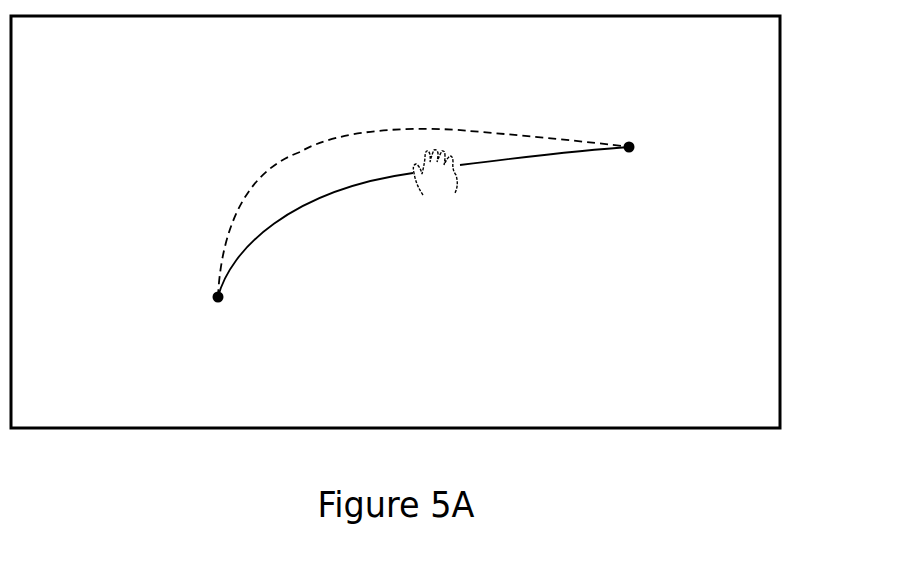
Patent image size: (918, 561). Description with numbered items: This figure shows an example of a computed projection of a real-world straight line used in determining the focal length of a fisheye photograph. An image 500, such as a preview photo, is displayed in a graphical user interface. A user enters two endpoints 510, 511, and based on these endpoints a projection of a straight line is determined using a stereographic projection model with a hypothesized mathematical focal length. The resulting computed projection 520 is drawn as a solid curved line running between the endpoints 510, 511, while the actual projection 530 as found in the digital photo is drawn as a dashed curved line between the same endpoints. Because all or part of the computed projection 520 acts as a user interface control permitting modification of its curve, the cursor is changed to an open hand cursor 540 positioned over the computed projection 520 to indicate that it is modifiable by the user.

The image 500 is at (253, 442).
The endpoint 510 is at (215, 312).
The endpoint 511 is at (645, 147).
The computed projection 520 is at (547, 165).
The actual projection 530 is at (230, 210).
The open hand cursor 540 is at (435, 208).